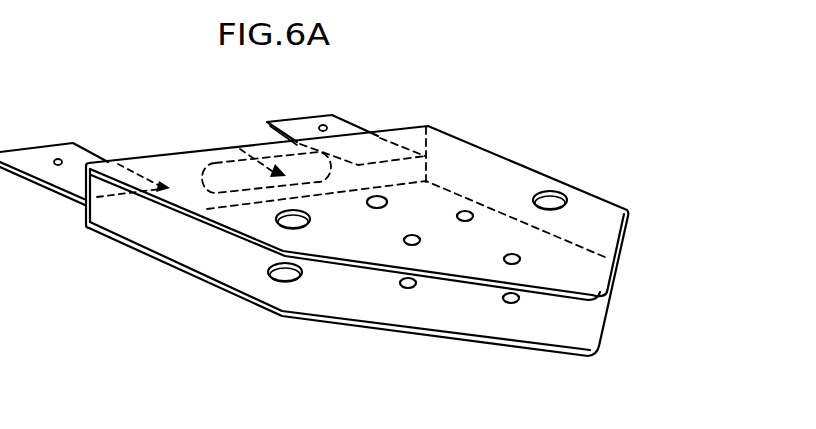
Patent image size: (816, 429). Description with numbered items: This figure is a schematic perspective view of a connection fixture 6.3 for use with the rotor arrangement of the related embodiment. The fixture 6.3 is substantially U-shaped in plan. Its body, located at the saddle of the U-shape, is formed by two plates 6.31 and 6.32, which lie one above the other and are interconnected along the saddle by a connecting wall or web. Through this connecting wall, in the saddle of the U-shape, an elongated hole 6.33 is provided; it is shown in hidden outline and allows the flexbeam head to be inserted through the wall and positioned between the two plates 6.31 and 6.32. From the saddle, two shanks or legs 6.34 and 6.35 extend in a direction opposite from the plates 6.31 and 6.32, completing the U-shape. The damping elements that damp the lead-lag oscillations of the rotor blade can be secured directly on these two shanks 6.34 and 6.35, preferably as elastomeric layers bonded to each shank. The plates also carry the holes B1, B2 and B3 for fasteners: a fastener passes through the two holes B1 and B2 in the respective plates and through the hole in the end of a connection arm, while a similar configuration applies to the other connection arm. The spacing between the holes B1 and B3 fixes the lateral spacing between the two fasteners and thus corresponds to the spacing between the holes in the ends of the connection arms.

The connection fixture 6.3 is at (548, 101).
The plate 6.31 is at (606, 309).
The plate 6.32 is at (531, 349).
The elongated hole 6.33 is at (240, 148).
The shank 6.34 is at (30, 156).
The shank 6.35 is at (306, 128).
The hole B1 is at (280, 228).
The hole B2 is at (284, 283).
The hole B3 is at (553, 190).